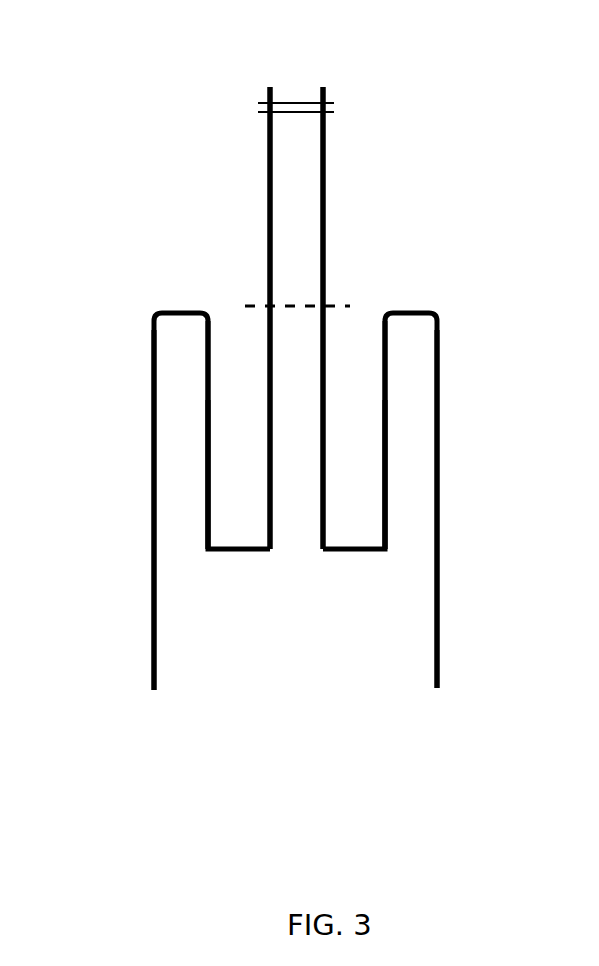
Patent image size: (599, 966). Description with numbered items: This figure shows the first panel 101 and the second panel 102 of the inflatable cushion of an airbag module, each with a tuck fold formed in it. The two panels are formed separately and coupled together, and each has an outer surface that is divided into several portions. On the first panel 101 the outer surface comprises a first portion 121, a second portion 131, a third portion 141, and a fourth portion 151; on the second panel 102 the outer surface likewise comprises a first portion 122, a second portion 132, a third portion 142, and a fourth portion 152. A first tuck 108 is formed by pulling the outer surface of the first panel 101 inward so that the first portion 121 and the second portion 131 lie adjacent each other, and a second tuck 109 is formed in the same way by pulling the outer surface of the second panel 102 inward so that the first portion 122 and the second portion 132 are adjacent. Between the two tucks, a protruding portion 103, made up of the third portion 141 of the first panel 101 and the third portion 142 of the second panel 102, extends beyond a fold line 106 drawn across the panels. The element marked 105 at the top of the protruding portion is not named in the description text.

The first panel 101 is at (154, 595).
The second panel 102 is at (438, 617).
The protruding portion 103 is at (293, 158).
The tube top end 105 is at (292, 103).
The fold line 106 is at (298, 306).
The first tuck 108 is at (235, 445).
The second tuck 109 is at (352, 440).
The first portion 121 is at (270, 410).
The first portion 122 is at (323, 400).
The second portion 131 is at (208, 453).
The second portion 132 is at (385, 473).
The third portion 141 is at (268, 197).
The third portion 142 is at (324, 187).
The fourth portion 151 is at (153, 423).
The fourth portion 152 is at (438, 430).